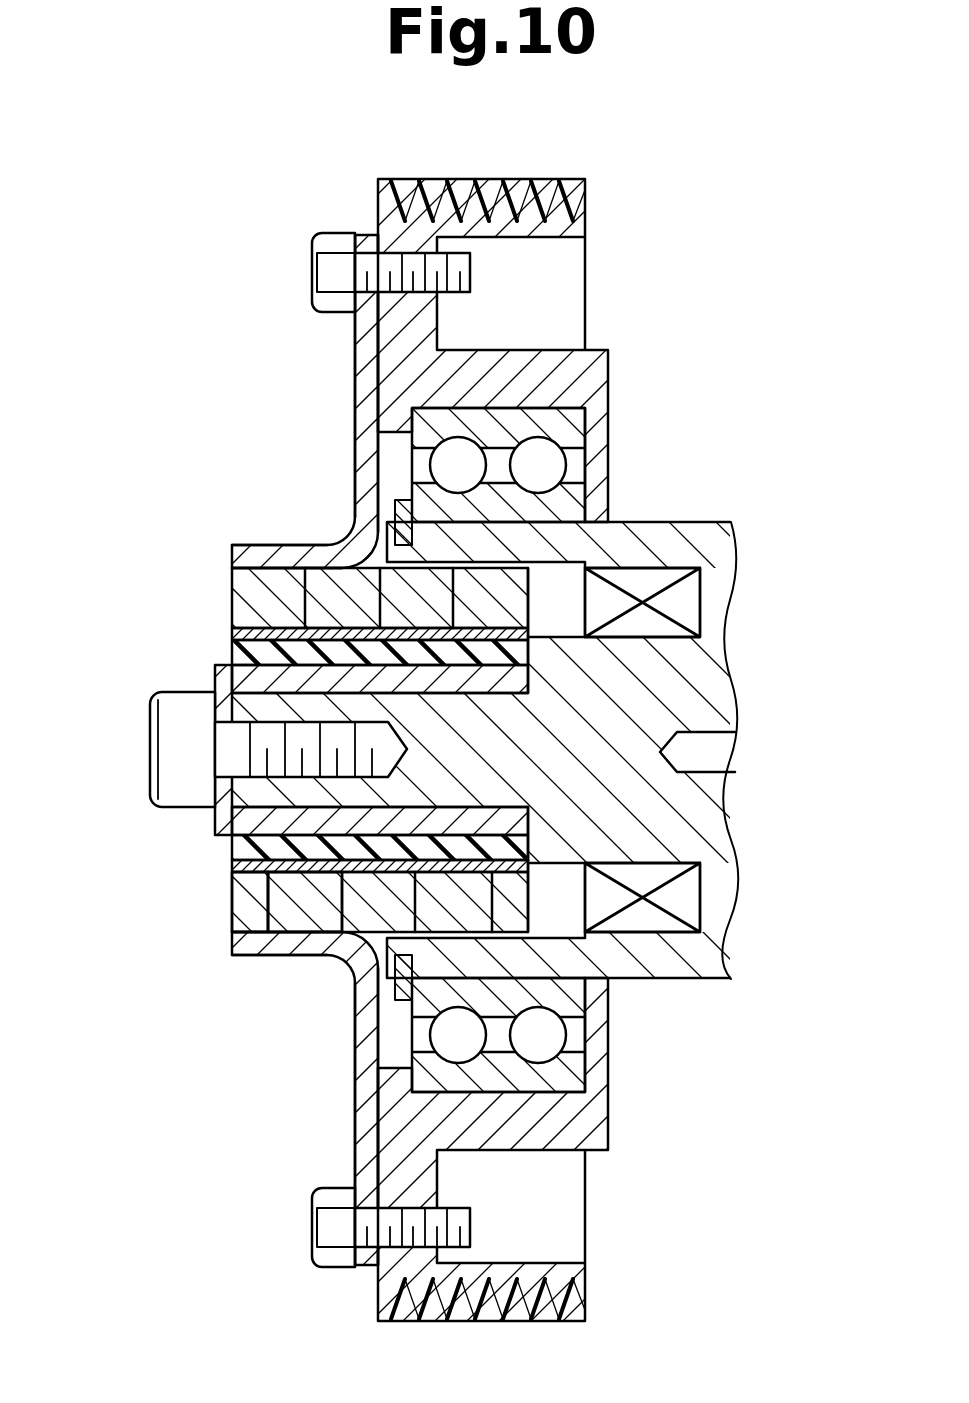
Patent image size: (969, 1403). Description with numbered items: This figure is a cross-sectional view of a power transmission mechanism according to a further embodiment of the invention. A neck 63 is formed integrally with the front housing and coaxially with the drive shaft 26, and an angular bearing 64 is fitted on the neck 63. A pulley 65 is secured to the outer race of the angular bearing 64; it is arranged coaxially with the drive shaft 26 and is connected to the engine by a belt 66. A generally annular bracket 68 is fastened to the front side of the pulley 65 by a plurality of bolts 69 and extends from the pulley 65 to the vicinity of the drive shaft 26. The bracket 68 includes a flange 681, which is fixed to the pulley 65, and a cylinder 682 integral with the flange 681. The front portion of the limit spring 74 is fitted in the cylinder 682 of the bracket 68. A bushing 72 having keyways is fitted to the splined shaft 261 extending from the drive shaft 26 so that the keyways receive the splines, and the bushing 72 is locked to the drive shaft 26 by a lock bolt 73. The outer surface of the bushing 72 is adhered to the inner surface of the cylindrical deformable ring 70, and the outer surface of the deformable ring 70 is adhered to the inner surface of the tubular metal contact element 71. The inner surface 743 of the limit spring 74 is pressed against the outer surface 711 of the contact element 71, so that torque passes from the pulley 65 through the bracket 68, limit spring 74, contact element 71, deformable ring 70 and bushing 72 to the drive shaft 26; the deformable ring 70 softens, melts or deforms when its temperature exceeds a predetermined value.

The drive shaft 26 is at (718, 823).
The splined shaft 261 is at (258, 702).
The neck 63 is at (665, 522).
The angular bearing 64 is at (557, 472).
The pulley 65 is at (378, 197).
The belt 66 is at (500, 180).
The bracket 68 is at (356, 410).
The flange 681 is at (362, 343).
The cylinder 682 is at (277, 547).
The bolts 69 is at (312, 270).
The deformable ring 70 is at (232, 655).
The contact element 71 is at (232, 632).
The bushing 72 is at (243, 822).
The lock bolt 73 is at (165, 752).
The limit spring 74 is at (232, 590).
The inner surface 743 is at (233, 895).
The outer surface 711 is at (320, 878).